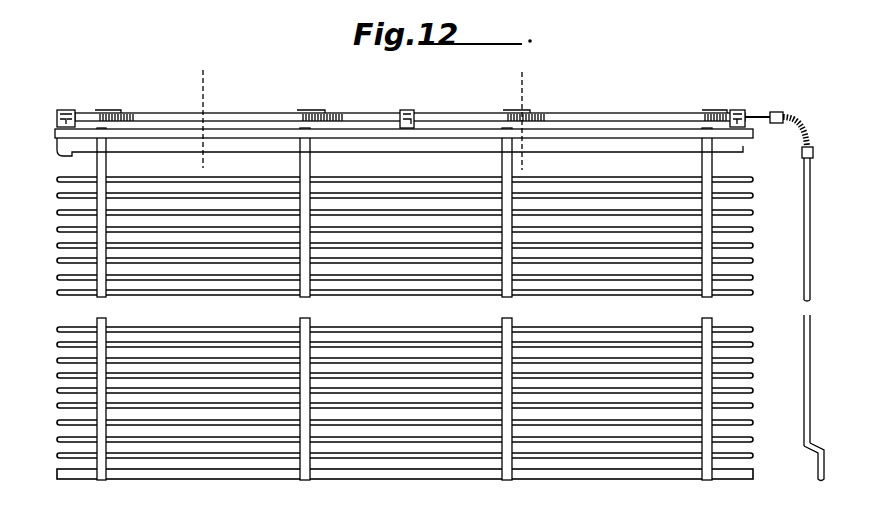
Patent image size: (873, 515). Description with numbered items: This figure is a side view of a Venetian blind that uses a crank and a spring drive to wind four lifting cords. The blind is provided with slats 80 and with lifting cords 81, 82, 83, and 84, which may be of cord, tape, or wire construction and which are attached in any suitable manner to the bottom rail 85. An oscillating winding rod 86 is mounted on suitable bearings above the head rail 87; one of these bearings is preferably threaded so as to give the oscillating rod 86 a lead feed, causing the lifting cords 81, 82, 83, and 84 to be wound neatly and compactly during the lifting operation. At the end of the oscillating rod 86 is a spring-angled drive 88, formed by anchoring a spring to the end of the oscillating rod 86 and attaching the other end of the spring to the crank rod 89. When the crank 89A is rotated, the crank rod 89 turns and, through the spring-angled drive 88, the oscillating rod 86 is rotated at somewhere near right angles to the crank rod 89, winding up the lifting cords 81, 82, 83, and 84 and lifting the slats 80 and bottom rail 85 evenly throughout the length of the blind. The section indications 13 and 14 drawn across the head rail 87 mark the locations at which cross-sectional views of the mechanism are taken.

The slats 80 is at (57, 259).
The lifting cord 81 is at (96, 325).
The lifting cord 82 is at (298, 325).
The lifting cord 83 is at (500, 325).
The lifting cord 84 is at (700, 325).
The bottom rail 85 is at (427, 476).
The oscillating winding rod 86 is at (634, 113).
The head rail 87 is at (440, 130).
The spring-angled drive 88 is at (798, 124).
The crank rod 89 is at (812, 218).
The crank 89A is at (818, 462).
The section line 13- 13 is at (206, 153).
The section line 14- 14 is at (525, 155).